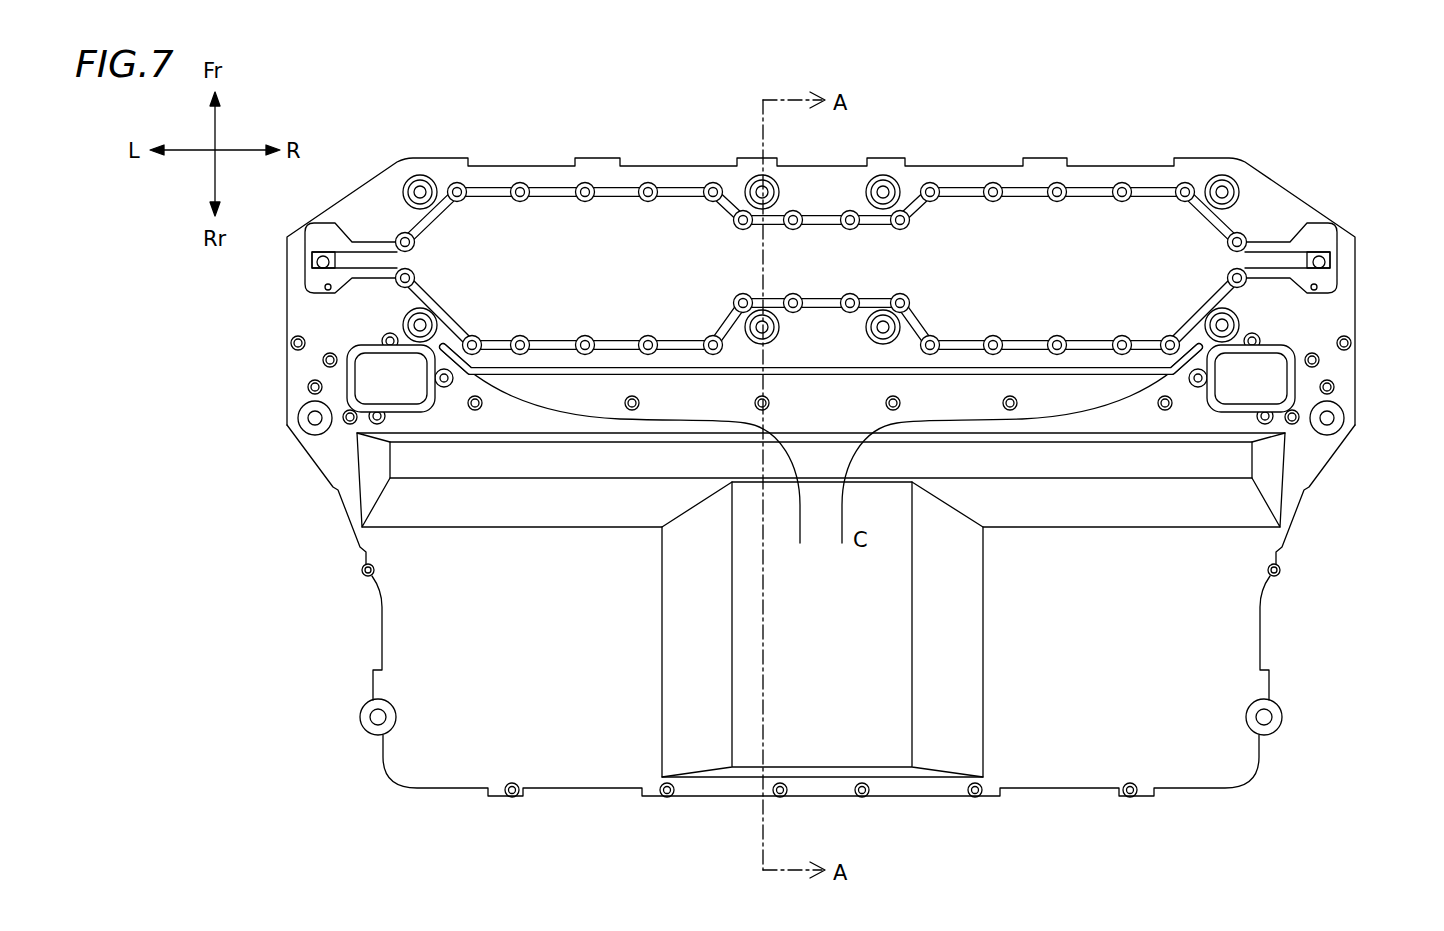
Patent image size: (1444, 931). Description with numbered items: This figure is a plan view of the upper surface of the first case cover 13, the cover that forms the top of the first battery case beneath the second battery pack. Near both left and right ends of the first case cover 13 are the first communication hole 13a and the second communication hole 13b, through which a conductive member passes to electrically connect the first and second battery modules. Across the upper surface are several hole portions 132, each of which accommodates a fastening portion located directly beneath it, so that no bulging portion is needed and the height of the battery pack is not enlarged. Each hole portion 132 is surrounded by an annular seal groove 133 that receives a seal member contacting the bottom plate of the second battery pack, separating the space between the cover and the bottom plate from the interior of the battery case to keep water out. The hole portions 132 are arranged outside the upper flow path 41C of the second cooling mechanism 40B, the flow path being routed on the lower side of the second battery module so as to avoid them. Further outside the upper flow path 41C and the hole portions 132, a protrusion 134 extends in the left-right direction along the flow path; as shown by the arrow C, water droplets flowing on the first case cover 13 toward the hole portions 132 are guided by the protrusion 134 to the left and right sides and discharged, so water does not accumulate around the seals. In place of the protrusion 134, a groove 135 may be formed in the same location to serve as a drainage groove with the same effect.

The first case cover 13 is at (885, 703).
The first communication hole 13a is at (383, 378).
The second communication hole 13b is at (1263, 377).
The second cooling mechanism 40B is at (549, 184).
The upper flow path 41C is at (1012, 263).
The hole portion 132 is at (410, 178).
The seal groove 133 is at (770, 180).
The protrusion 134 is at (1080, 368).
The groove 135 is at (821, 321).